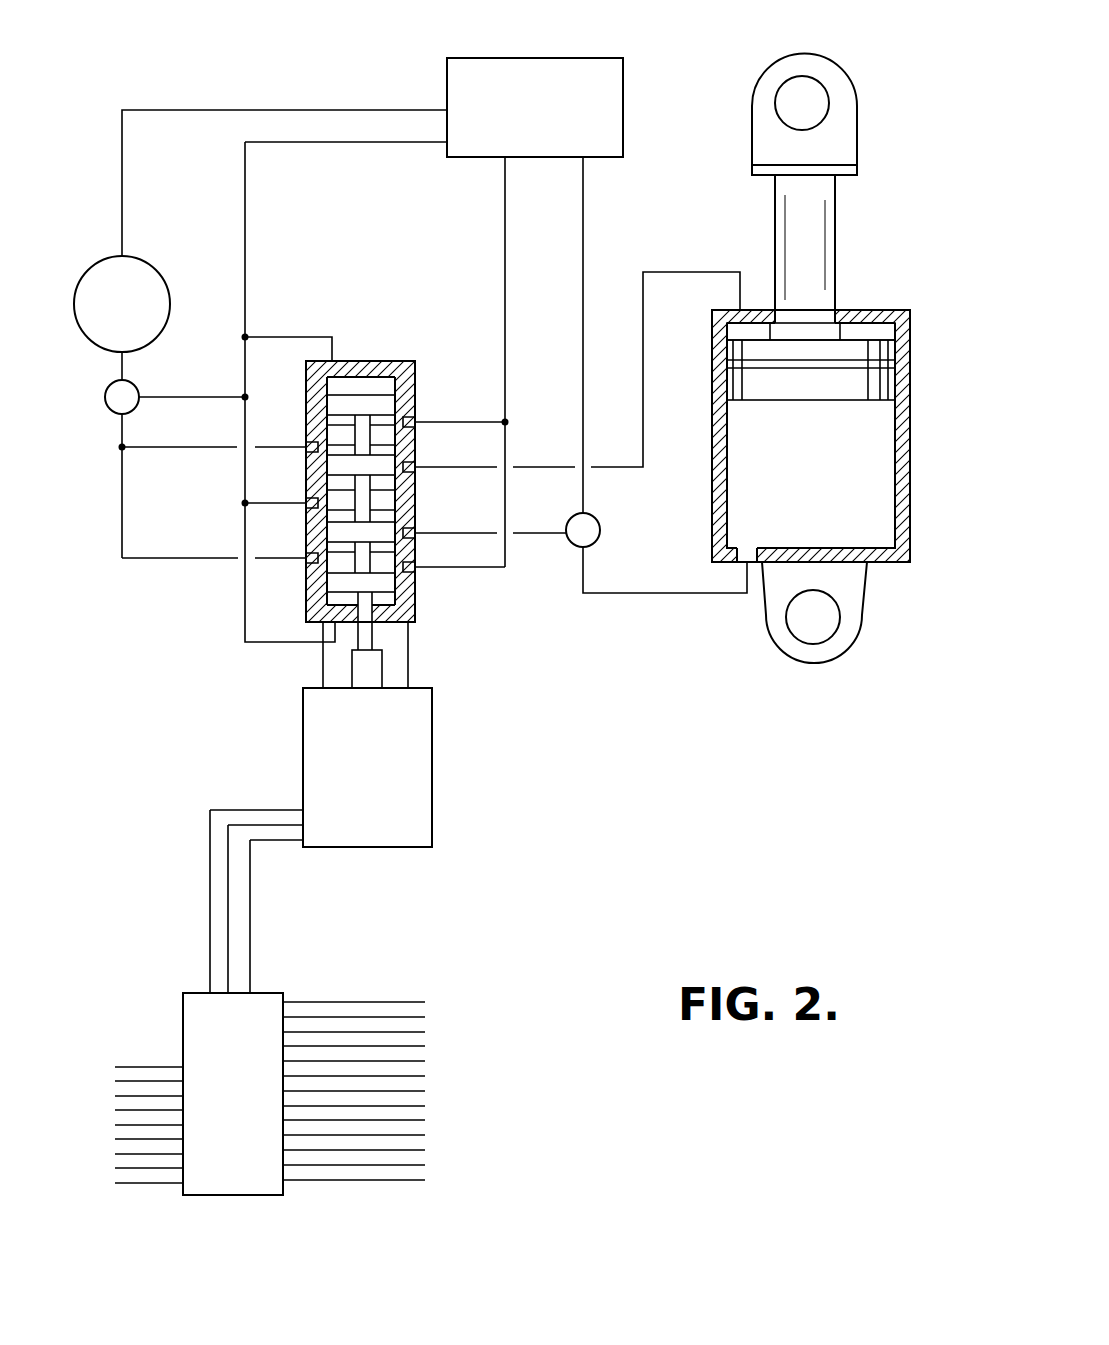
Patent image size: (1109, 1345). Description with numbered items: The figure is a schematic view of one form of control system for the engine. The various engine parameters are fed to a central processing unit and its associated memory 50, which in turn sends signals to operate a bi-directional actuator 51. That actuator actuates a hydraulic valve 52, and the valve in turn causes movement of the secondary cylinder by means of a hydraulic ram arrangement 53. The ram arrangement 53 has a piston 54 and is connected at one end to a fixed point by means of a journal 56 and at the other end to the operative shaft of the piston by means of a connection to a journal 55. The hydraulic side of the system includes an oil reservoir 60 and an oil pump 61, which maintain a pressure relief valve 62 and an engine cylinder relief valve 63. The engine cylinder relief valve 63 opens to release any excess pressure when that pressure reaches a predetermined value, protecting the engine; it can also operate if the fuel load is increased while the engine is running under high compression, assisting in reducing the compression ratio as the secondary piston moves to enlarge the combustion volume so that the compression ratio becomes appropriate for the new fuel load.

The central processing unit and associated memory 50 is at (258, 1095).
The pump unit 51 is at (395, 781).
The hydraulic valve 52 is at (403, 360).
The hydraulic ram arrangement 53 is at (855, 473).
The piston 54 is at (860, 383).
The journal 55 is at (845, 103).
The journal 56 is at (808, 625).
The oil reservoir 60 is at (568, 120).
The oil pump 61 is at (135, 288).
The pressure relief valve 62 is at (125, 397).
The engine cylinder relief valve 63 is at (597, 530).